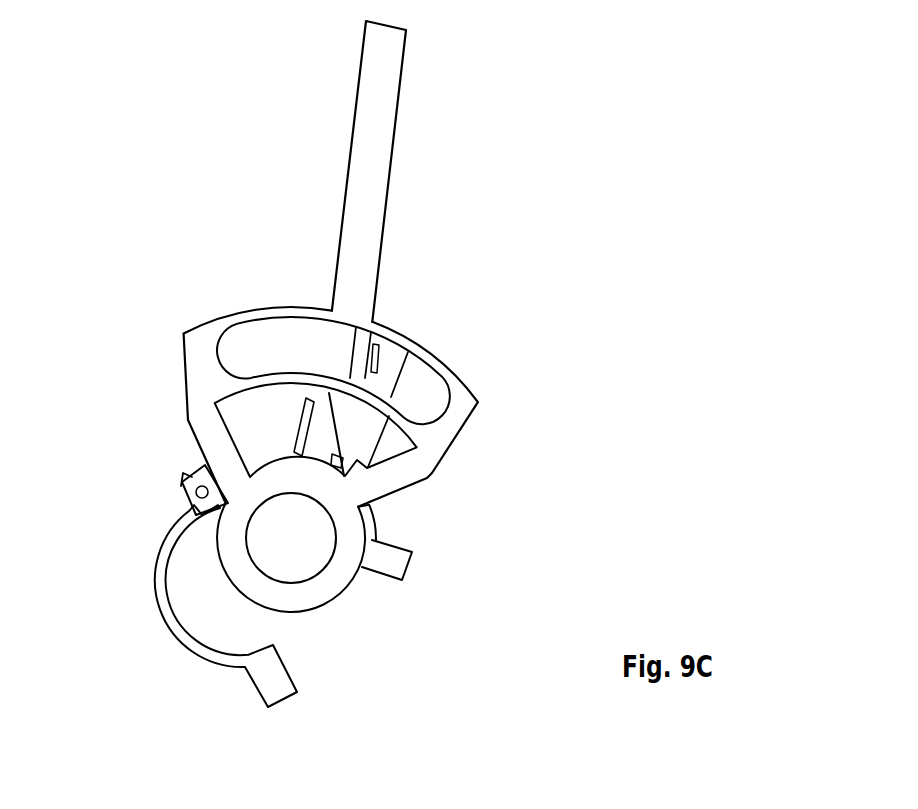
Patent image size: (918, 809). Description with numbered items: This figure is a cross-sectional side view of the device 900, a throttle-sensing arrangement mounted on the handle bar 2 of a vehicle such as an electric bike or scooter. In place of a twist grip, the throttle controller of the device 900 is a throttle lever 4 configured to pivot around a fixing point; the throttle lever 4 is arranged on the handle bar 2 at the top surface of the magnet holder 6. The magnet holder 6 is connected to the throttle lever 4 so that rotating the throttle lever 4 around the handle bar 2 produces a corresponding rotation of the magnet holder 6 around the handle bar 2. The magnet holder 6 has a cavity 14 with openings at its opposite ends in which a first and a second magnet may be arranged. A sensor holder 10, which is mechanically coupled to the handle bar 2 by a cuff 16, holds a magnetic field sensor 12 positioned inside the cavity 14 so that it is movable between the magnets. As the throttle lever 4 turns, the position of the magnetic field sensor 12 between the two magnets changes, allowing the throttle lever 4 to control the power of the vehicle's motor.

The device 900 is at (193, 158).
The handle bar 2 is at (315, 557).
The throttle lever 4 is at (373, 188).
The magnet holder 6 is at (453, 422).
The sensor holder 10 is at (393, 377).
The magnetic field sensor 12 is at (362, 360).
The cavity 14 is at (266, 338).
The cuff 16 is at (168, 550).